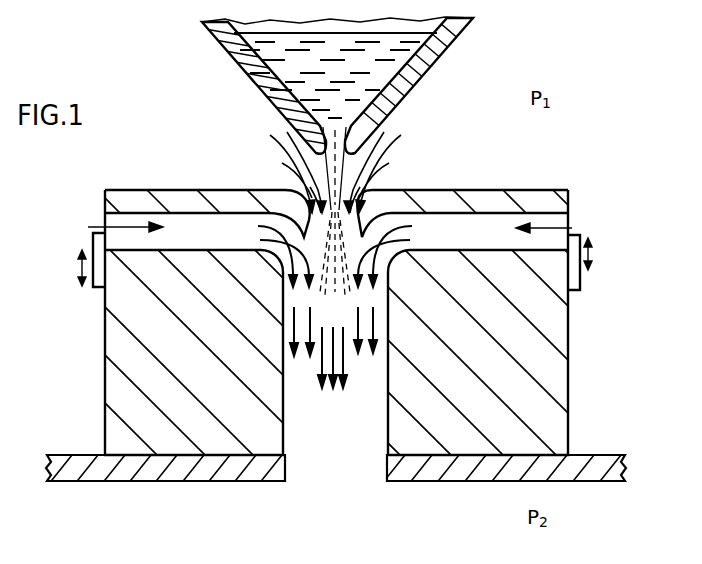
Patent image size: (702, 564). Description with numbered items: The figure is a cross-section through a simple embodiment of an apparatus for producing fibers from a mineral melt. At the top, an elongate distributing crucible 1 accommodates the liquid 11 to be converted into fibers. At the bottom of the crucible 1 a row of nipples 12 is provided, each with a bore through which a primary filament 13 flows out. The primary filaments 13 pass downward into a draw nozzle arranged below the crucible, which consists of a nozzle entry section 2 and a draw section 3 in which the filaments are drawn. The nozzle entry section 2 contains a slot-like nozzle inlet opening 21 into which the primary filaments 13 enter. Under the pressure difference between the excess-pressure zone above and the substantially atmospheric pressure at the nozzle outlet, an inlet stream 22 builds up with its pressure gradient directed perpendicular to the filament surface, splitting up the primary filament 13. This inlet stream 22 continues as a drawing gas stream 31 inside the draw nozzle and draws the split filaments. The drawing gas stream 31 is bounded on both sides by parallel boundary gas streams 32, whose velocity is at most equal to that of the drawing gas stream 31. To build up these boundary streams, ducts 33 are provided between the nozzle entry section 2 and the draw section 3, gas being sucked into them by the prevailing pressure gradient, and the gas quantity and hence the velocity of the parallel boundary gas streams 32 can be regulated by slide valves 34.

The distributing crucible 1 is at (456, 41).
The liquid 11 is at (383, 58).
The nipples 12 is at (358, 146).
The primary filaments 13 is at (287, 132).
The nozzle entry section 2 is at (496, 191).
The nozzle inlet opening 21 is at (360, 187).
The inlet stream 22 is at (282, 163).
The draw section 3 is at (568, 359).
The drawing gas stream 31 is at (328, 390).
The parallel boundary gas streams 32 is at (299, 358).
The ducts 33 is at (562, 222).
The slide valves 34 is at (578, 274).